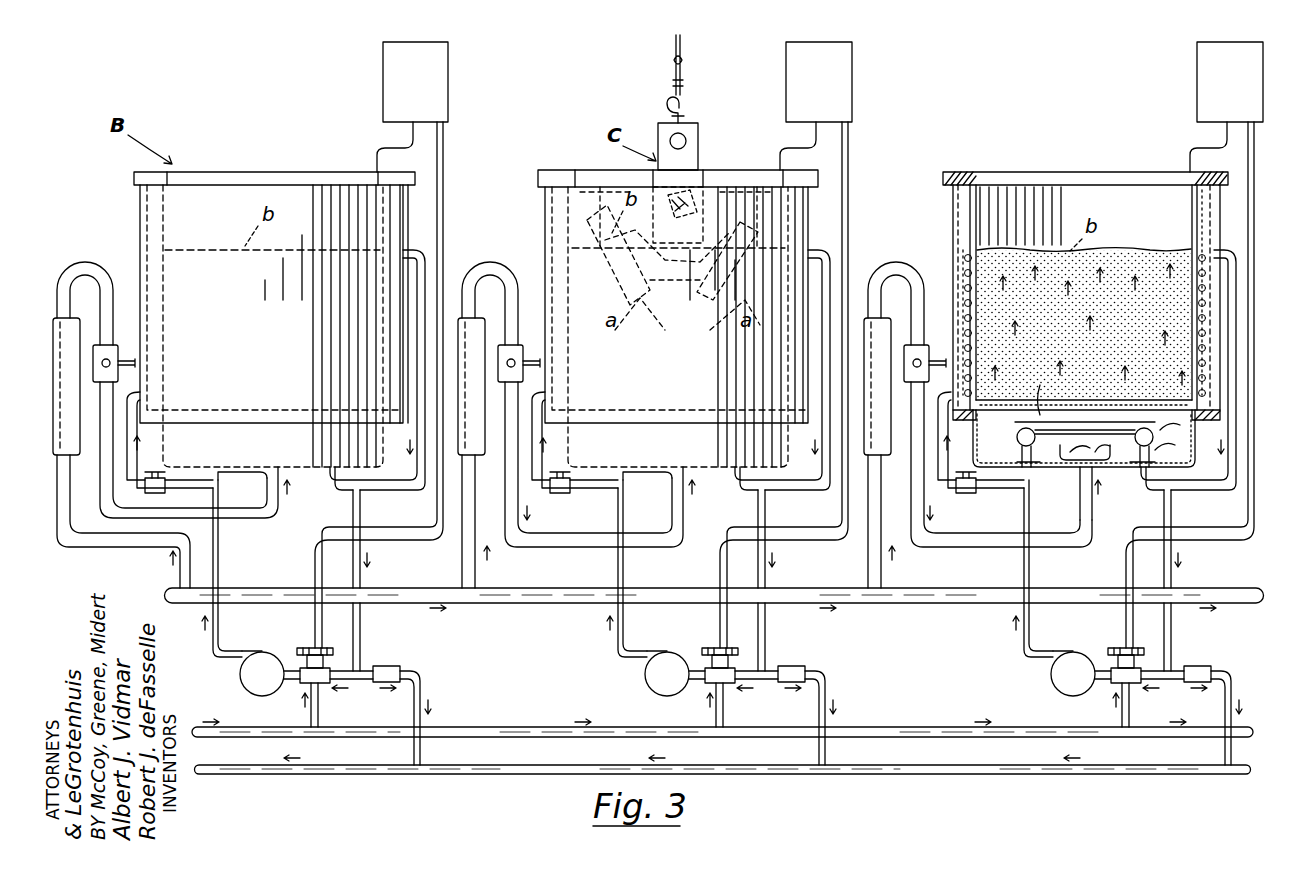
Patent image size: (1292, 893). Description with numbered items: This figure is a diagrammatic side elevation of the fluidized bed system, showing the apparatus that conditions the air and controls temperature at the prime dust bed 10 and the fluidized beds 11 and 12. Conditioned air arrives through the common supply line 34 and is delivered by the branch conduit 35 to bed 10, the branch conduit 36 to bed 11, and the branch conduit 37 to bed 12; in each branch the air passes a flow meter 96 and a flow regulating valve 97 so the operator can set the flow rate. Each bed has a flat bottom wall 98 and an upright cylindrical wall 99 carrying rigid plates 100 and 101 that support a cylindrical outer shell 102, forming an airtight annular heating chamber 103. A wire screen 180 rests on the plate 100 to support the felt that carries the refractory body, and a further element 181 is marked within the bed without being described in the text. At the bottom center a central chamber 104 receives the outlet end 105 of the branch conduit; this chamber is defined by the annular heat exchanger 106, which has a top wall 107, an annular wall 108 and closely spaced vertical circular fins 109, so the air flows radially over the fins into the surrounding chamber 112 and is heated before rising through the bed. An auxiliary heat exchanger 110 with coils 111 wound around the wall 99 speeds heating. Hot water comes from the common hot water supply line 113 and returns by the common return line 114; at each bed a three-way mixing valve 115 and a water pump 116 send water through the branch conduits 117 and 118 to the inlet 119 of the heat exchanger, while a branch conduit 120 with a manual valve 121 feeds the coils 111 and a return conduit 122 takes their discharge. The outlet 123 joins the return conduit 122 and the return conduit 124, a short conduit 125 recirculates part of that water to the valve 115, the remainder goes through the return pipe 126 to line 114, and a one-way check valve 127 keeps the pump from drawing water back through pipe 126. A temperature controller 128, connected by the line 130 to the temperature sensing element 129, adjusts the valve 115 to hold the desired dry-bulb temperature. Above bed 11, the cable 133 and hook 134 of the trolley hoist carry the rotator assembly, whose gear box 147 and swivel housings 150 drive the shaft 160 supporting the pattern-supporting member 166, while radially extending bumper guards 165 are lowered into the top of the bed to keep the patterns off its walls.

The prime dust bed 10 is at (134, 206).
The fluidized bed 11 is at (539, 230).
The fluidized bed 12 is at (951, 224).
The conditioned air supply line 34 is at (279, 590).
The branch conduit 35 is at (57, 532).
The branch conduit 36 is at (462, 548).
The branch conduit 37 is at (870, 548).
The flow meter 96 is at (57, 318).
The flow regulating valve 97 is at (120, 360).
The bottom wall 98 is at (315, 468).
The cylindrical wall 99 is at (383, 467).
The rigid plate 100 is at (1183, 430).
The rigid plate 101 is at (965, 172).
The cylindrical outer shell 102 is at (140, 253).
The annular heating chamber 103 is at (1205, 225).
The central chamber 104 is at (1048, 568).
The outlet end 105 is at (1080, 510).
The annular heat exchanger 106 is at (1017, 435).
The top wall 107 is at (1035, 428).
The annular wall 108 is at (1143, 460).
The vertical circular fins 109 is at (1085, 442).
The auxiliary heat exchanger 110 is at (968, 256).
The coils 111 is at (973, 302).
The chamber 112 is at (1005, 480).
The hot water supply line 113 is at (878, 727).
The return line 114 is at (243, 775).
The 3-way mixing valve 115 is at (305, 648).
The water pump 116 is at (258, 655).
The branch conduit 117 is at (318, 708).
The branch conduit 118 is at (215, 560).
The inlet 119 is at (1086, 479).
The branch conduit 120 is at (172, 480).
The manual valve 121 is at (563, 493).
The return conduit 122 is at (823, 250).
The outlet 123 is at (1165, 505).
The return conduit 124 is at (360, 650).
The short conduit 125 is at (1150, 666).
The return pipe 126 is at (422, 692).
The one-way check valve 127 is at (400, 668).
The temperature controller 128 is at (383, 77).
The temperature sensing element 129 is at (1145, 425).
The line 130 is at (377, 158).
The cable 133 is at (676, 40).
The hook 134 is at (672, 110).
The gear box 147 is at (700, 128).
The swivel housing 150 is at (703, 214).
The shaft 160 is at (672, 255).
The bumper guards 165 is at (603, 190).
The pattern-supporting member 166 is at (687, 314).
The wire screen 180 is at (1107, 395).
The flow path 181 is at (1045, 395).